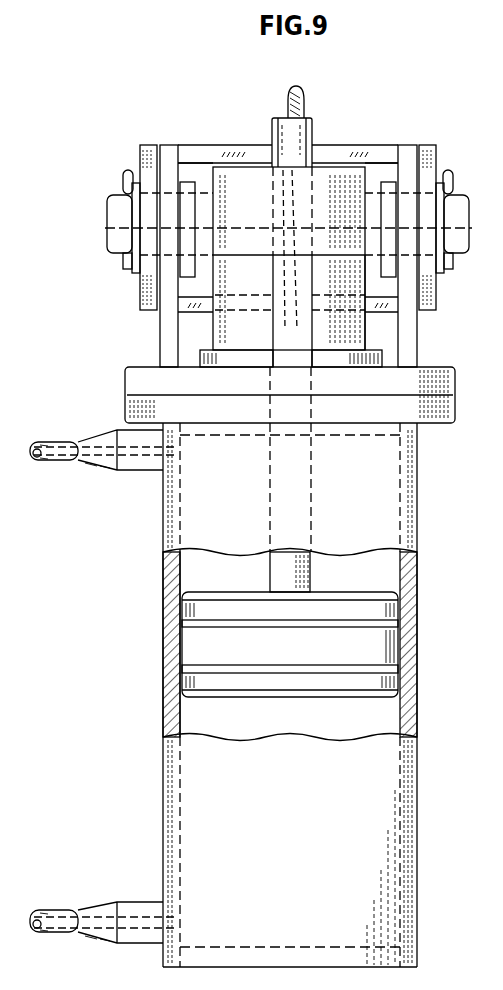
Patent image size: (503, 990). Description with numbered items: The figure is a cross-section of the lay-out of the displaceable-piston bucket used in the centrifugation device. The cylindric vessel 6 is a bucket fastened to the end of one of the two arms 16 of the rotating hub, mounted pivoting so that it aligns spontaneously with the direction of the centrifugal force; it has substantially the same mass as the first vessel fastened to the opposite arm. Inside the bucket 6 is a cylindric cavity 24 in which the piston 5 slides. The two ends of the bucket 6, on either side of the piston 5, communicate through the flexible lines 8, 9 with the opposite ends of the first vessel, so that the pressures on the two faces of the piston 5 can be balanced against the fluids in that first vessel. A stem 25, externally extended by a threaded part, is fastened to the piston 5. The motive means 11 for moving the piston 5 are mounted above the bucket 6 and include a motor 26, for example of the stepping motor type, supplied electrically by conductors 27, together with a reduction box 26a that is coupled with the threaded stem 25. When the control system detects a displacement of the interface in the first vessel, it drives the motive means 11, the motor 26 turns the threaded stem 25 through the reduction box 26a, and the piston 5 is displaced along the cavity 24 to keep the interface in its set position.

The piston 5 is at (198, 642).
The cylindric vessel 6 is at (128, 745).
The flexible line 8 is at (85, 910).
The flexible line 9 is at (77, 462).
The motive means 11 is at (242, 188).
The arm 16 is at (428, 150).
The cylindric cavity 24 is at (185, 722).
The stem 25 is at (283, 568).
The motor 26 is at (365, 327).
The reduction box 26a is at (342, 173).
The conductors 27 is at (302, 90).